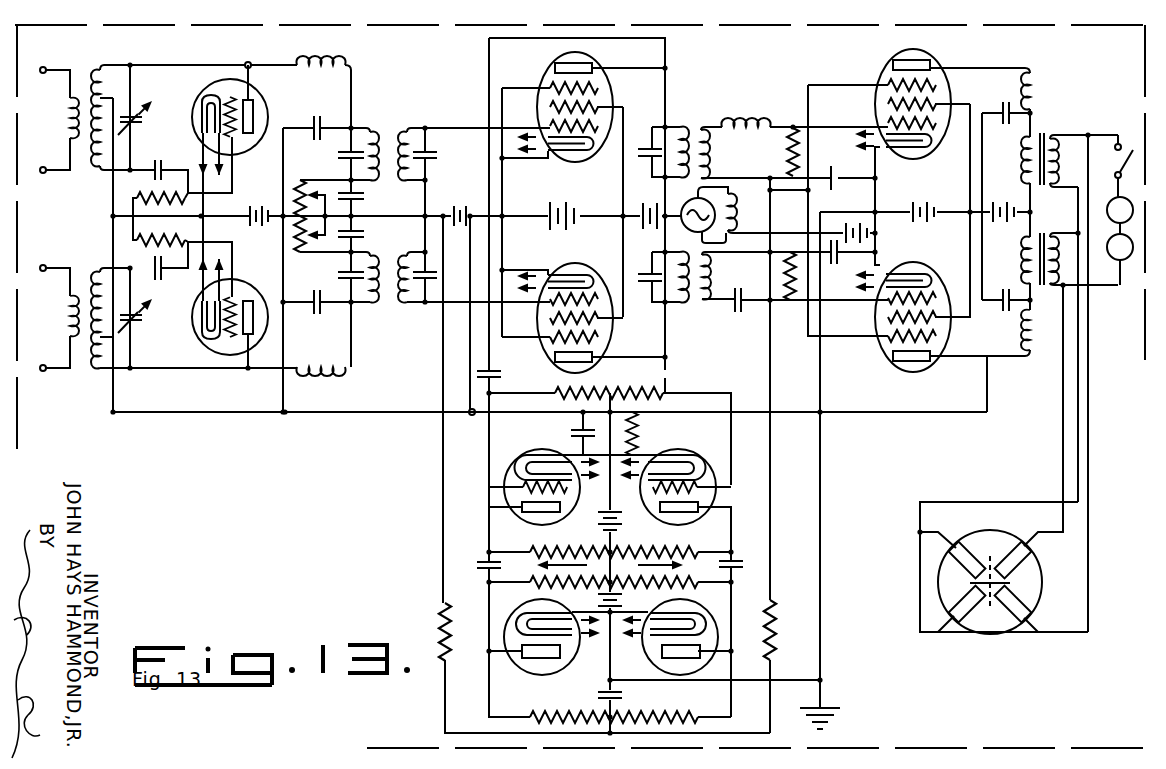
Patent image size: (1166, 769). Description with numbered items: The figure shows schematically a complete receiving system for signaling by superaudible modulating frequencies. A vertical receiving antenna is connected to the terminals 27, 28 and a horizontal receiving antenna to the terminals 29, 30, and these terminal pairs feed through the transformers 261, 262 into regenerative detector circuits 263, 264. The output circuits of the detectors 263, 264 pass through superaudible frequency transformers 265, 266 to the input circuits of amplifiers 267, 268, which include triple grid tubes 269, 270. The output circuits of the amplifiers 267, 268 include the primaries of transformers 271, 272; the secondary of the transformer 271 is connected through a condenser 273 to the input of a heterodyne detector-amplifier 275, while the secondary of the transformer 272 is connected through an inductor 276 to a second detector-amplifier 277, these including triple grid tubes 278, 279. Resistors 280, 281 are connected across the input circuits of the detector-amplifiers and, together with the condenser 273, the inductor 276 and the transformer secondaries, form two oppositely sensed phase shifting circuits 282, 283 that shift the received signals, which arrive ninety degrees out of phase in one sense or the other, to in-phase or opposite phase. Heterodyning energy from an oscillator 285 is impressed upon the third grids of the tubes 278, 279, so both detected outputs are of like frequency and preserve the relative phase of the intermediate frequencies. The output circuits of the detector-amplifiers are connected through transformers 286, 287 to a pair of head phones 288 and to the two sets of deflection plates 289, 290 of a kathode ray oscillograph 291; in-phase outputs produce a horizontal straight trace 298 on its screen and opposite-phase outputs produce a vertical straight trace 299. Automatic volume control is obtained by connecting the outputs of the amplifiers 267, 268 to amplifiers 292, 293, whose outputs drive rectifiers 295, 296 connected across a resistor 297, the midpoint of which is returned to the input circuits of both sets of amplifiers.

The terminal 27 is at (51, 353).
The terminal 28 is at (51, 268).
The terminal 29 is at (50, 155).
The terminal 30 is at (50, 68).
The transformer 261 is at (82, 358).
The transformer 262 is at (81, 166).
The regenerative detector circuit 263 is at (187, 344).
The regenerative detector circuit 264 is at (182, 139).
The superaudible frequency transformer 265 is at (387, 300).
The superaudible frequency transformer 266 is at (386, 175).
The amplifier 267 is at (597, 254).
The amplifier 268 is at (597, 191).
The triple grid tube 269 is at (548, 353).
The triple grid tube 270 is at (538, 82).
The transformer 271 is at (698, 303).
The transformer 272 is at (695, 112).
The condenser 273 is at (737, 314).
The detector-amplifier 275 is at (933, 247).
The inductor 276 is at (768, 104).
The detector-amplifier 277 is at (935, 187).
The triple grid tube 278 is at (917, 365).
The triple grid tube 279 is at (945, 87).
The resistor 280 is at (790, 303).
The resistor 281 is at (797, 155).
The phase shifting circuit 282 is at (766, 272).
The phase shifting circuit 283 is at (765, 153).
The oscillator 285 is at (681, 220).
The transformer 286 is at (1043, 233).
The transformer 287 is at (1042, 133).
The head phones 288 is at (1128, 262).
The deflection plates 289 is at (1015, 542).
The deflection plates 290 is at (968, 542).
The kathode ray oscillograph 291 is at (1007, 499).
The amplifier 292 is at (697, 441).
The amplifier 293 is at (550, 441).
The rectifier 295 is at (695, 706).
The rectifier 296 is at (557, 704).
The resistor 297 is at (545, 719).
The horizontal straight trace 298 is at (1010, 583).
The vertical straight trace 299 is at (990, 608).